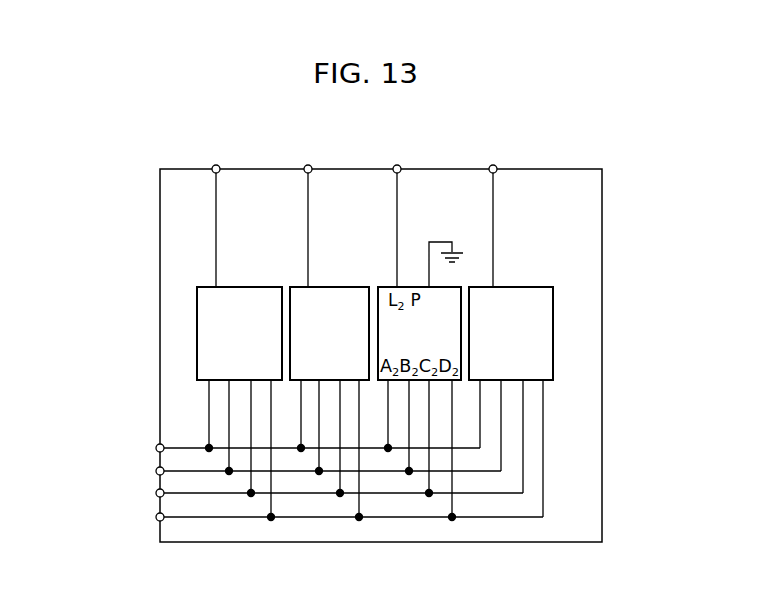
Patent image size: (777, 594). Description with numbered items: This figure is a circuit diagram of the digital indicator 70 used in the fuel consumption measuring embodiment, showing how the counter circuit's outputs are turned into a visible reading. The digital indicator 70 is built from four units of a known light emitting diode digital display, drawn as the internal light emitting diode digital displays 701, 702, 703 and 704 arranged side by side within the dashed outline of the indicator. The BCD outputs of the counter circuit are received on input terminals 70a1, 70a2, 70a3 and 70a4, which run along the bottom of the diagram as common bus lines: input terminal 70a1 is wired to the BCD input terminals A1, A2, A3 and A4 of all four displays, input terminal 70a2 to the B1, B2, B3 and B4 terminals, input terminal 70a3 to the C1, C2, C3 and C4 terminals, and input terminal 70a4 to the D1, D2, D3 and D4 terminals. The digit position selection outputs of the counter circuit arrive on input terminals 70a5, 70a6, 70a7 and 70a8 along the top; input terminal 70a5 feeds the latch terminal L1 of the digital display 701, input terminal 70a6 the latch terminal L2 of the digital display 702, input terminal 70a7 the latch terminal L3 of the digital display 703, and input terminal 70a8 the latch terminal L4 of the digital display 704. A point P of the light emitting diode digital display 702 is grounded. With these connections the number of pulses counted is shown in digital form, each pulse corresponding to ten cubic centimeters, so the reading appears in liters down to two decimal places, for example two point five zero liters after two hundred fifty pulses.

The digital indicator 70 is at (545, 169).
The input terminal 70a1 is at (156, 448).
The input terminal 70a2 is at (156, 471).
The input terminal 70a3 is at (156, 493).
The input terminal 70a4 is at (156, 517).
The input terminal 70a5 is at (494, 165).
The input terminal 70a6 is at (398, 165).
The input terminal 70a7 is at (309, 165).
The input terminal 70a8 is at (217, 165).
The light emitting diode digital display 701 is at (525, 287).
The light emitting diode digital display 702 is at (440, 287).
The light emitting diode digital display 703 is at (339, 287).
The light emitting diode digital display 704 is at (246, 287).